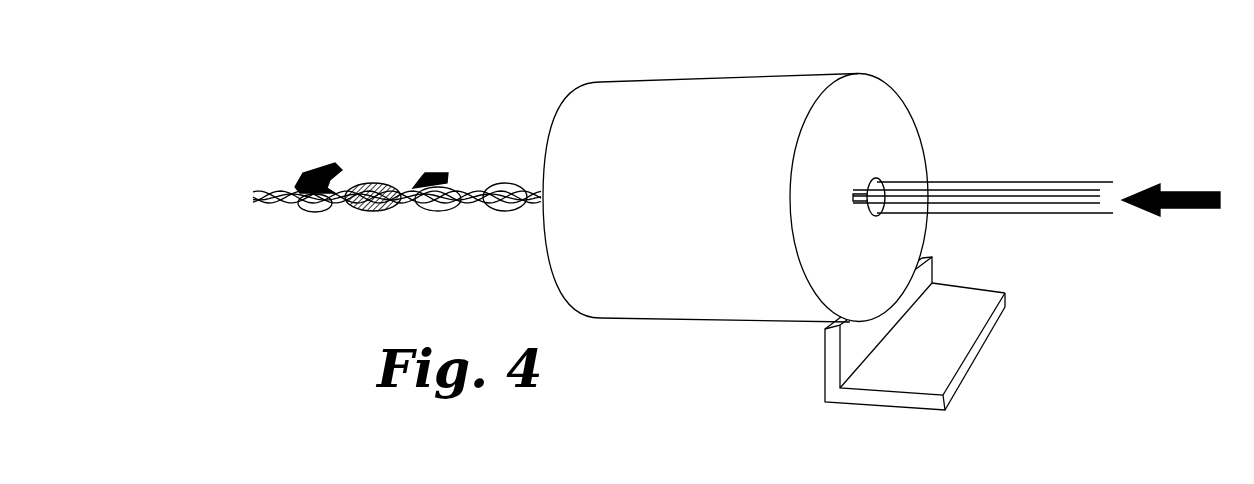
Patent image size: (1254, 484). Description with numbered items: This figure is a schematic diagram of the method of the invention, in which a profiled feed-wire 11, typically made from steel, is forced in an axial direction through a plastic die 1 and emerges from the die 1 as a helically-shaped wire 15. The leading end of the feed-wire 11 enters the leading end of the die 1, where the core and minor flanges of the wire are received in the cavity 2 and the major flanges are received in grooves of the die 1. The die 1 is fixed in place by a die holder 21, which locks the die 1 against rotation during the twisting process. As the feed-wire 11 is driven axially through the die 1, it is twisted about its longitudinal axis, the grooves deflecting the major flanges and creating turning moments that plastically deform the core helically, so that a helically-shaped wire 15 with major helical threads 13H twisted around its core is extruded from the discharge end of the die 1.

The plastic die 1 is at (602, 145).
The cavity 2 is at (888, 175).
The feed-wire 11 is at (1048, 223).
The major helical threads 13H is at (499, 176).
The helically-shaped wire 15 is at (302, 219).
The die holder 21 is at (816, 352).